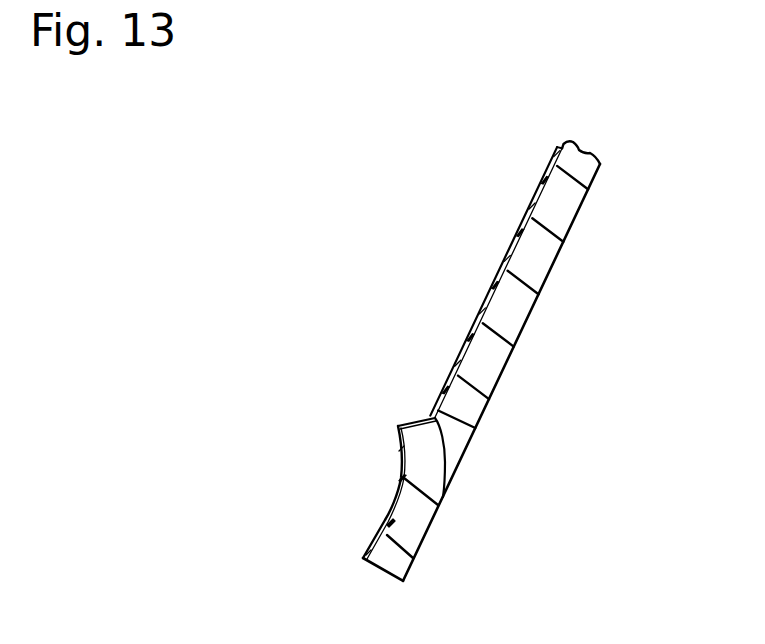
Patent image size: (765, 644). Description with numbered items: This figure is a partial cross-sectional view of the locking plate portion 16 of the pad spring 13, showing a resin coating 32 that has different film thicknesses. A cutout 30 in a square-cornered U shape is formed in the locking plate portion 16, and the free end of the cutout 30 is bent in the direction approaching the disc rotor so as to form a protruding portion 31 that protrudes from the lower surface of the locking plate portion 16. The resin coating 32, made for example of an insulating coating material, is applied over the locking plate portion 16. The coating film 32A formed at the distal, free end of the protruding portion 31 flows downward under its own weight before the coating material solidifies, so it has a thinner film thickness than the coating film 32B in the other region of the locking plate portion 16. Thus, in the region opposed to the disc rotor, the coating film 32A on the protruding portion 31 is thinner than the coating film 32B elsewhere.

The pad spring 13 is at (605, 165).
The locking plate portion 16 is at (525, 302).
The cutout 30 is at (453, 421).
The protruding portion 31 is at (425, 434).
The resin coating 32 is at (479, 318).
The coating film 32A is at (398, 426).
The coating film 32B is at (526, 232).